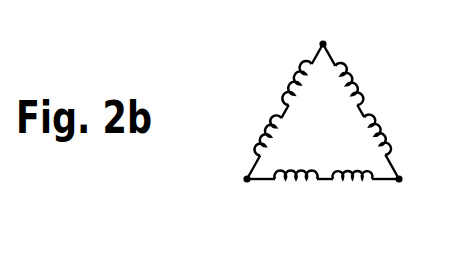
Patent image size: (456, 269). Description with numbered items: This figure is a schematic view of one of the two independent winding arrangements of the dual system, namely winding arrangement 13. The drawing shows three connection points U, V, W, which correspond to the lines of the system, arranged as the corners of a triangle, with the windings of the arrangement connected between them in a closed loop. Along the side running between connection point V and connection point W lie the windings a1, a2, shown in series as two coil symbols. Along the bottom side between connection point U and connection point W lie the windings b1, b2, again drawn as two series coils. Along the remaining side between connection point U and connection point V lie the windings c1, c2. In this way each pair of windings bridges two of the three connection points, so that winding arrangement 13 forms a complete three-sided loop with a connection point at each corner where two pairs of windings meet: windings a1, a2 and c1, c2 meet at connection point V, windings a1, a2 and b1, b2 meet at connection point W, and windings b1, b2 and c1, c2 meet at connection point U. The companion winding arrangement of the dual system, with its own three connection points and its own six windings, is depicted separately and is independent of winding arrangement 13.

The winding arrangement 13 is at (314, 62).
The winding a1 is at (357, 83).
The winding a2 is at (386, 132).
The winding b1 is at (352, 191).
The winding b2 is at (295, 191).
The winding c1 is at (259, 131).
The winding c2 is at (287, 81).
The connection point U is at (238, 189).
The connection point V is at (322, 31).
The connection point W is at (412, 188).